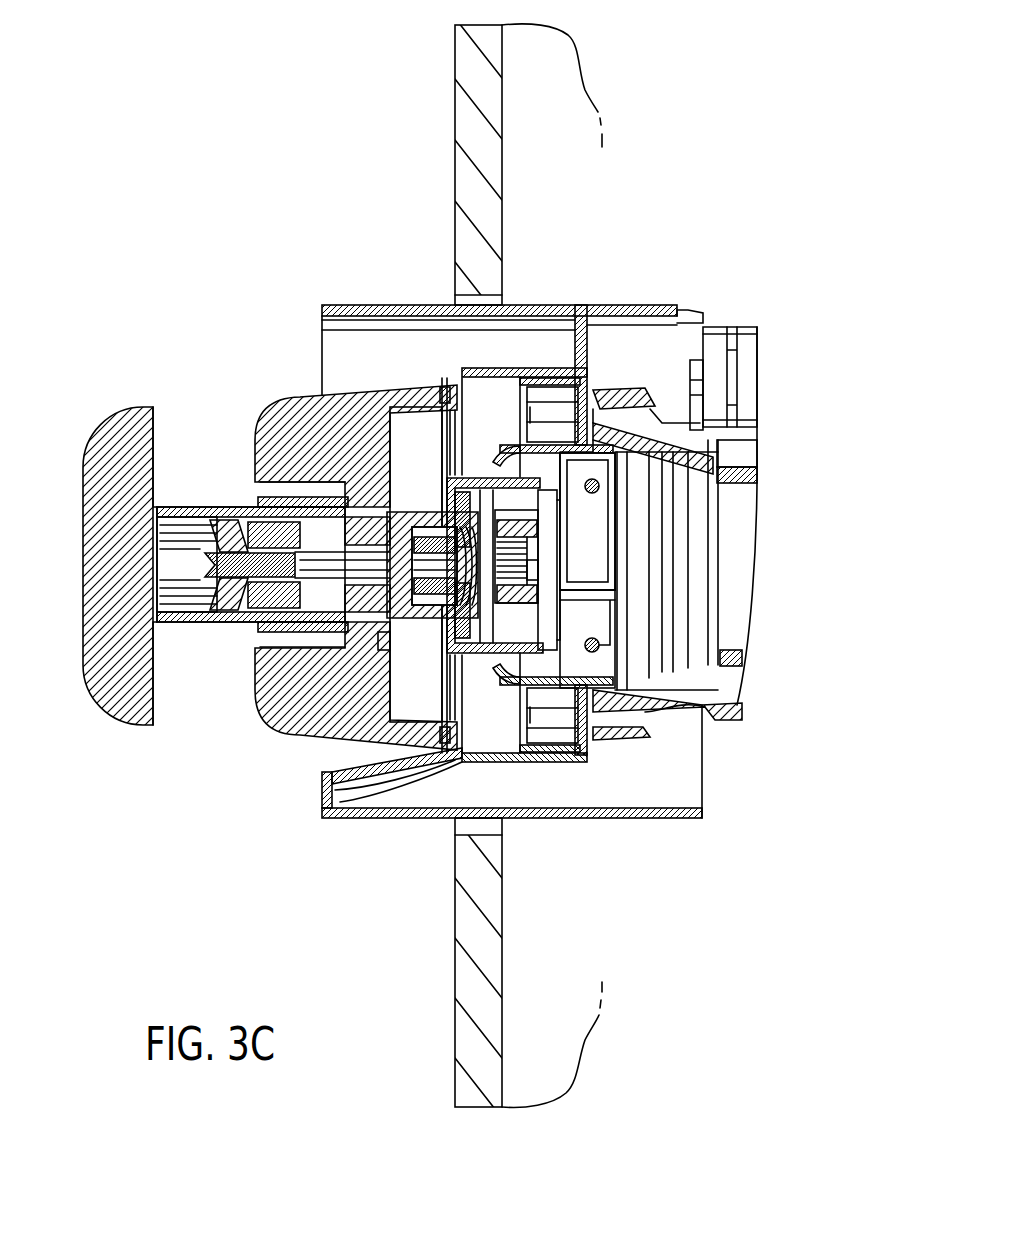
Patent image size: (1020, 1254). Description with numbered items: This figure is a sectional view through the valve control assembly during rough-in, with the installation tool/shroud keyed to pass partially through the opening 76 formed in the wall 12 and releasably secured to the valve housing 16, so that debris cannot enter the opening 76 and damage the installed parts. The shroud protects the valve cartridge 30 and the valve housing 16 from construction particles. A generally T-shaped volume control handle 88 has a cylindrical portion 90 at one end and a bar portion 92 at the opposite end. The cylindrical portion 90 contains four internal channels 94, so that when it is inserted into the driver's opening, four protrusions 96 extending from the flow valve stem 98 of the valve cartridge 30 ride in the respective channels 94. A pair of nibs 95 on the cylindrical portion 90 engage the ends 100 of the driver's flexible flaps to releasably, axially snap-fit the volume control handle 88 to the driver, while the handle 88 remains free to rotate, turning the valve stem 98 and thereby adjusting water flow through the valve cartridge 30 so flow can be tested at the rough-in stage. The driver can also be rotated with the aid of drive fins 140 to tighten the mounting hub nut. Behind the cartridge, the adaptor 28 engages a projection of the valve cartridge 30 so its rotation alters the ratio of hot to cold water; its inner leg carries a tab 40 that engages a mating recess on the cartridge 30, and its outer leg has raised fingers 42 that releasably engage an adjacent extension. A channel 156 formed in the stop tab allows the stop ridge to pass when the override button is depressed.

The wall 12 is at (455, 60).
The opening 76 is at (484, 297).
The channel 156 is at (420, 750).
The volume control handle 88 is at (80, 680).
The bar portion 92 is at (95, 432).
The cylindrical portion 90 is at (213, 508).
The internal channels 94 is at (178, 518).
The protrusions 96 is at (218, 605).
The flow valve stem 98 is at (250, 605).
The ends of flaps 100 is at (330, 495).
The drive fins 140 is at (342, 398).
The valve cartridge 30 is at (430, 492).
The raised fingers 42 is at (550, 388).
The tab 40 is at (432, 660).
The nibs 95 is at (388, 640).
The adaptor 28 is at (587, 756).
The valve housing 16 is at (615, 405).